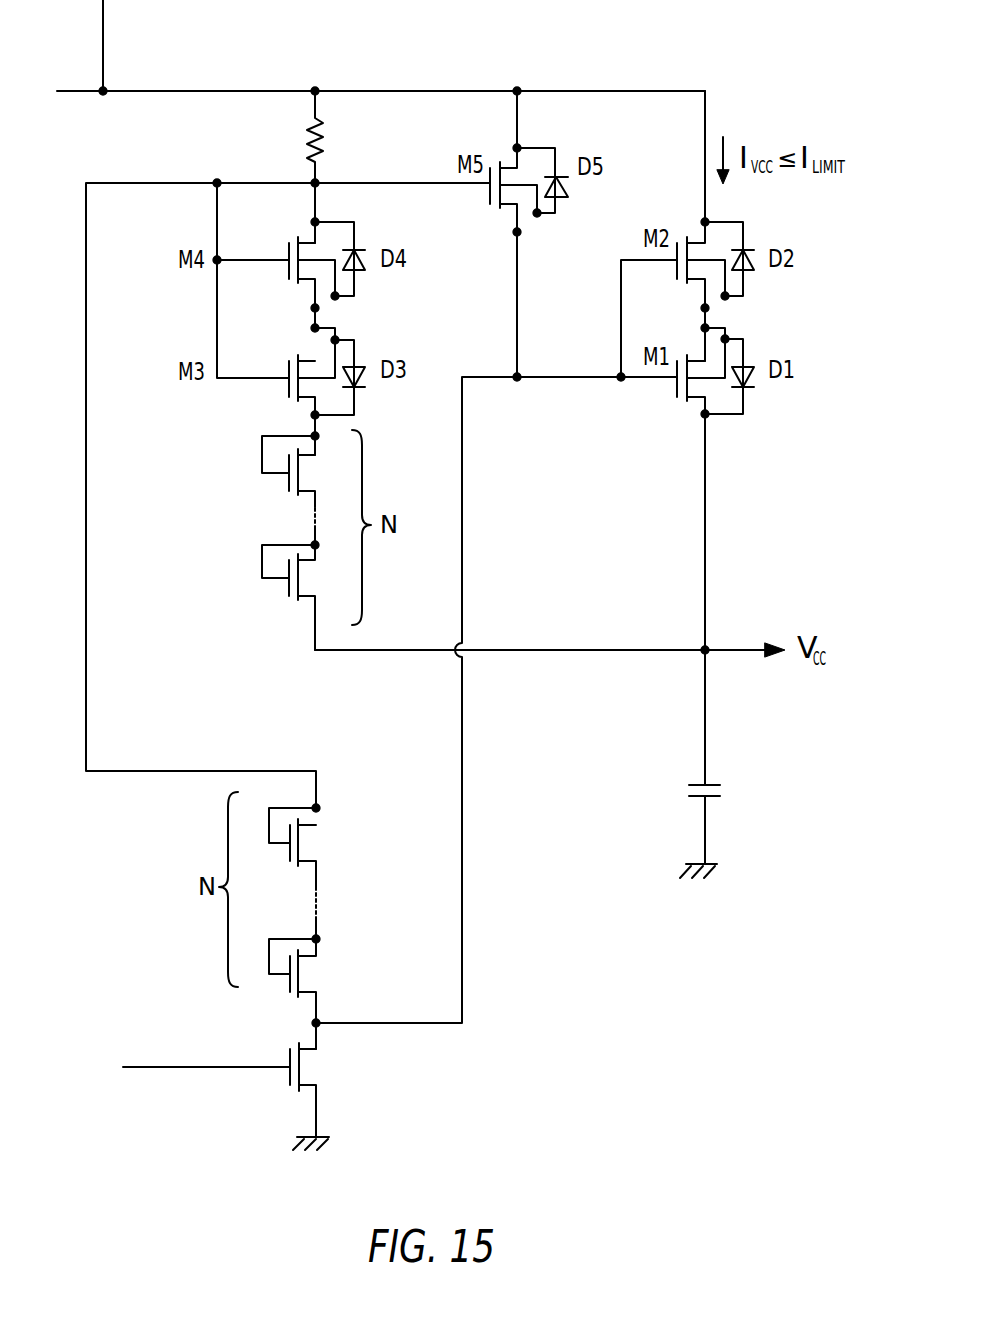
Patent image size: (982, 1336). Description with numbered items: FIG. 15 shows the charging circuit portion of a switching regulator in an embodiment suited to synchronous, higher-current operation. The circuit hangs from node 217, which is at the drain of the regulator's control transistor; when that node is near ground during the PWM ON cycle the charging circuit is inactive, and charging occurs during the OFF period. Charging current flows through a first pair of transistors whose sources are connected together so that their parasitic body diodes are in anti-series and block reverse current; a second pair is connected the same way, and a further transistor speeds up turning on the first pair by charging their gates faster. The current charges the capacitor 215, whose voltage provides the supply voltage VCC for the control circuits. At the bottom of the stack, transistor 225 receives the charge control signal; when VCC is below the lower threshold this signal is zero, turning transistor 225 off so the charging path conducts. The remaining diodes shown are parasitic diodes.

The node 217 is at (105, 89).
The capacitor 215 is at (722, 790).
The transistor 225 is at (318, 1063).